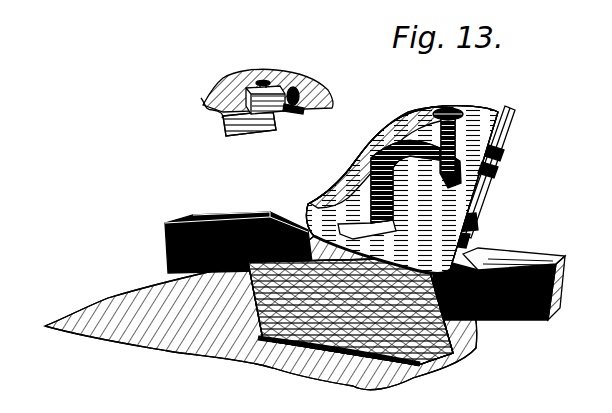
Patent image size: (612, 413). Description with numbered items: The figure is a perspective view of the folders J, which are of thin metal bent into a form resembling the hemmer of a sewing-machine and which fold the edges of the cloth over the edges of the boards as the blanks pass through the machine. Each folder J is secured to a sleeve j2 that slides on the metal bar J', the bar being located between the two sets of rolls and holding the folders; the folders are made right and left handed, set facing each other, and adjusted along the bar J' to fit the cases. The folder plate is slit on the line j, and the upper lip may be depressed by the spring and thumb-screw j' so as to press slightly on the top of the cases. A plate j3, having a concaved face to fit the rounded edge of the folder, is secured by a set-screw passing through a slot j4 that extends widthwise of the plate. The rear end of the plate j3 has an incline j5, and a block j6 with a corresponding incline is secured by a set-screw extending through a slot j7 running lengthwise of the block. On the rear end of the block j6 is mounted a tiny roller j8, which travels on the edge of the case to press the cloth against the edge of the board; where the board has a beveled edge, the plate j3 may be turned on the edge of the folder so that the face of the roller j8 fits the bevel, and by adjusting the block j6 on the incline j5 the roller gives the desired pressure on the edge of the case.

The folder J is at (393, 190).
The metal bar J' is at (499, 278).
The slit line j is at (399, 189).
The spring and thumb-screw j' is at (433, 131).
The sleeve j2 is at (475, 222).
The plate j3 is at (246, 126).
The slot j4 is at (488, 164).
The incline j5 is at (270, 112).
The block j6 is at (297, 103).
The slot j7 is at (268, 76).
The roller j8 is at (290, 82).